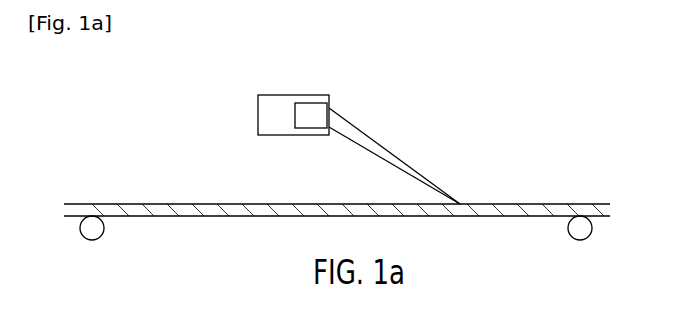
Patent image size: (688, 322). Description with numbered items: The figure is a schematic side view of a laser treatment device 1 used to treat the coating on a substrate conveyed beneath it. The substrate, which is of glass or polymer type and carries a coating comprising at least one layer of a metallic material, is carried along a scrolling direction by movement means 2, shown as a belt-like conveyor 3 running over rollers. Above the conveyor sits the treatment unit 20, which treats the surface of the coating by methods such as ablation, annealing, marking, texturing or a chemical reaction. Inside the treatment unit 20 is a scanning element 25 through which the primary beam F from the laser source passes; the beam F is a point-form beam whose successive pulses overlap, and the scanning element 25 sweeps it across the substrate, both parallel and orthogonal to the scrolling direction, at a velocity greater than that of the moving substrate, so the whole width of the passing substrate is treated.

The laser treatment device 1 is at (128, 130).
The movement means 2 is at (90, 242).
The conveyor belt 3 is at (563, 202).
The treatment unit 20 is at (308, 148).
The scanning element 25 is at (311, 115).
The primary beam F is at (402, 162).